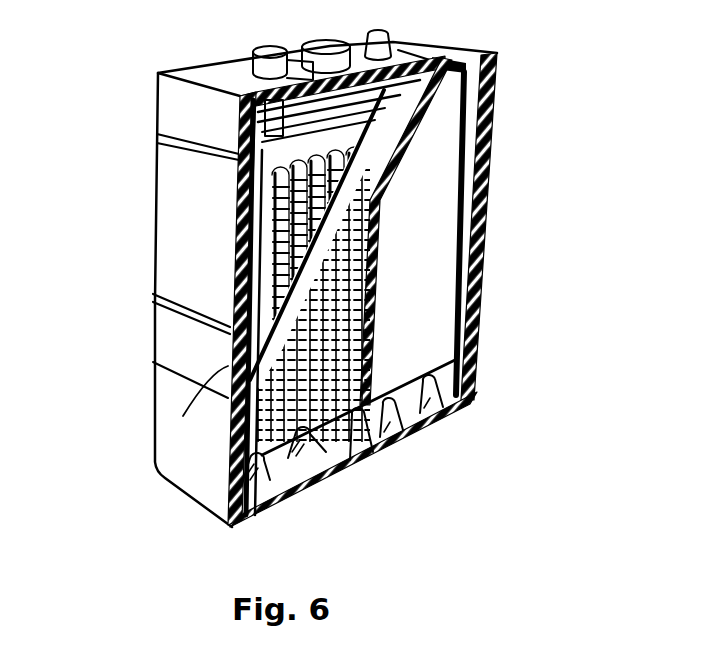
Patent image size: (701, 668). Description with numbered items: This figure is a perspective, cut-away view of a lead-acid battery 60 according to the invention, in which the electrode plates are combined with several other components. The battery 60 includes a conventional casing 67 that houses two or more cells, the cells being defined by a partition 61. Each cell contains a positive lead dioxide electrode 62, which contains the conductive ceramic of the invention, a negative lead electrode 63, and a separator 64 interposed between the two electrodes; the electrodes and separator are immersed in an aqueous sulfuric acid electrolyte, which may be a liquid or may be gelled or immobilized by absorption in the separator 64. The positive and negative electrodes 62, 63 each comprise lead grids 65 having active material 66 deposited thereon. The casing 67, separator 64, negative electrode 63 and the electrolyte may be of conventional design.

The lead-acid battery 60 is at (574, 130).
The partition 61 is at (437, 160).
The positive lead dioxide electrode 62 is at (260, 169).
The negative lead electrode 63 is at (228, 310).
The separator 64 is at (233, 260).
The lead grids 65 is at (332, 462).
The active material 66 is at (228, 314).
The casing 67 is at (156, 218).